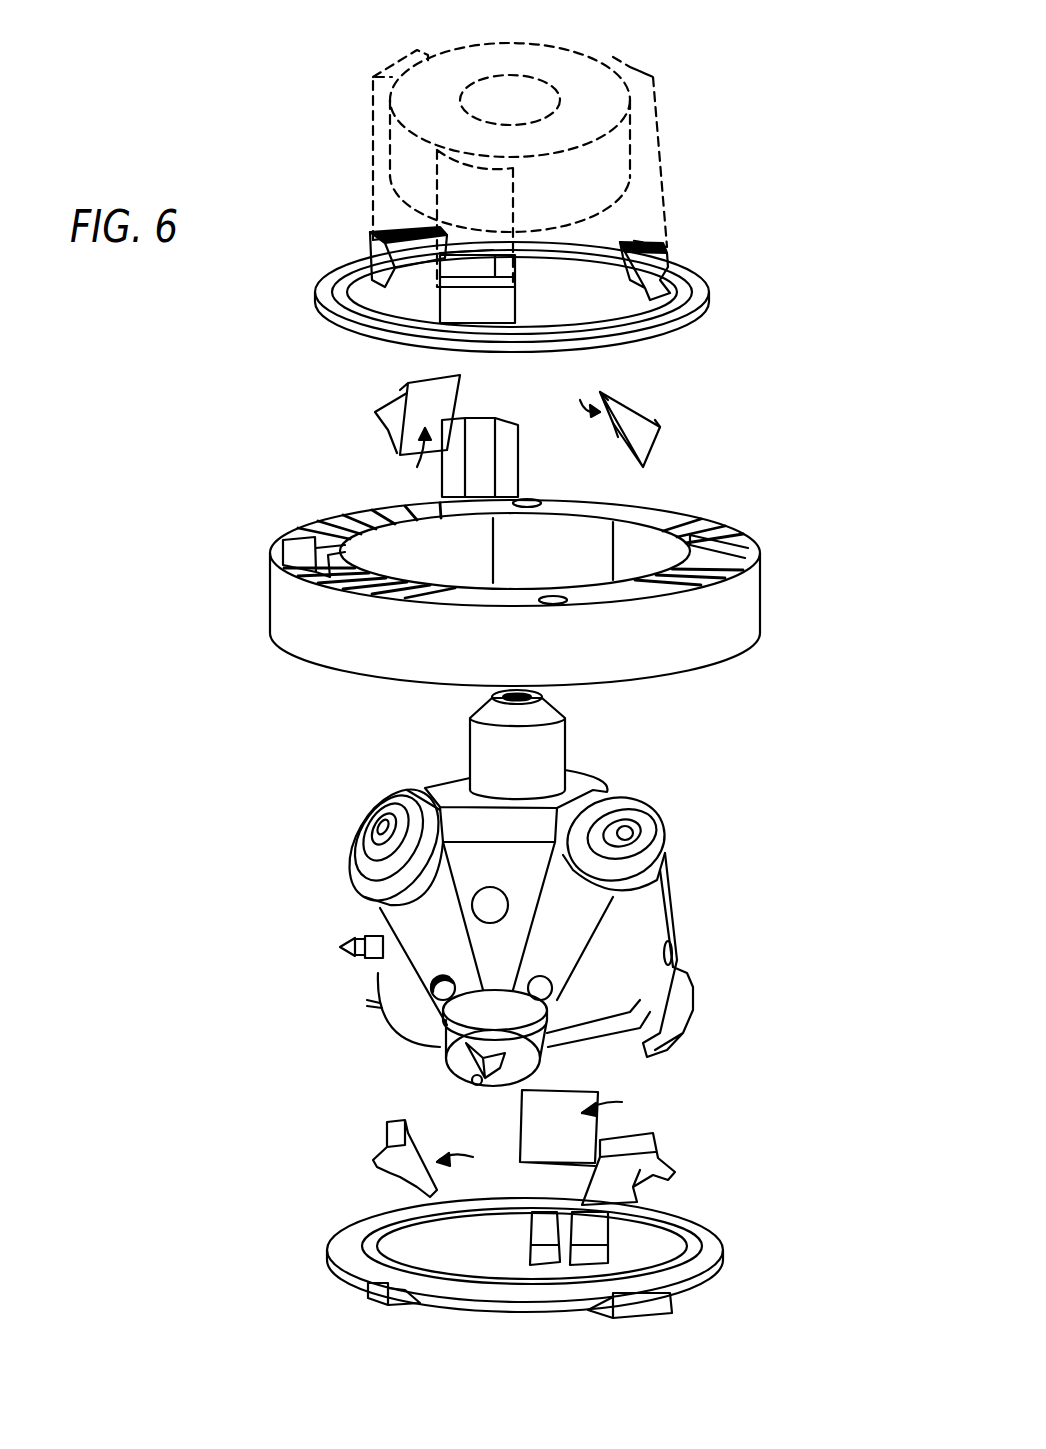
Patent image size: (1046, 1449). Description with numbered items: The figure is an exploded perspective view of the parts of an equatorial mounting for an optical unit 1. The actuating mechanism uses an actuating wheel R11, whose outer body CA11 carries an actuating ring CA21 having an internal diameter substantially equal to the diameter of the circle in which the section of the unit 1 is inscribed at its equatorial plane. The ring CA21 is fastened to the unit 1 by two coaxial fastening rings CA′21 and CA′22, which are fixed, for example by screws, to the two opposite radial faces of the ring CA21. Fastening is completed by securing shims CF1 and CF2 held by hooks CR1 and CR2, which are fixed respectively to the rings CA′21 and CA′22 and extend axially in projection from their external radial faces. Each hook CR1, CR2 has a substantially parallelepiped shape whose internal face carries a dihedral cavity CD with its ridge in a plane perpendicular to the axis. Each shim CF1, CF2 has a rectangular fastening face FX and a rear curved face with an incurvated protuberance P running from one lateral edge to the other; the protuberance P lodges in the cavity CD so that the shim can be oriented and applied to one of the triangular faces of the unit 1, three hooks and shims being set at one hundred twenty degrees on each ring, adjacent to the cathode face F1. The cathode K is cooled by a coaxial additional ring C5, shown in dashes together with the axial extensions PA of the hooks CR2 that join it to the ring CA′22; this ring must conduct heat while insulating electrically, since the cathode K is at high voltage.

The coaxial additional ring C5 is at (563, 62).
The axial extensions PA is at (377, 157).
The fastening ring CA′22 is at (574, 767).
The dihedral cavity CD is at (445, 248).
The hooks CR2 is at (380, 238).
The securing shims CF2 is at (537, 777).
The protuberance P is at (375, 412).
The fastening face FX is at (519, 768).
The actuating wheel R11 is at (513, 575).
The actuating wheel ring CA11 is at (753, 550).
The actuating ring CA21 is at (670, 530).
The optical unit 1 is at (477, 888).
The cathode face F1 is at (523, 888).
The cathode K is at (517, 744).
The securing shims CF1 is at (375, 1158).
The fastening ring CA′21 is at (735, 1252).
The hooks CR1 is at (527, 1252).